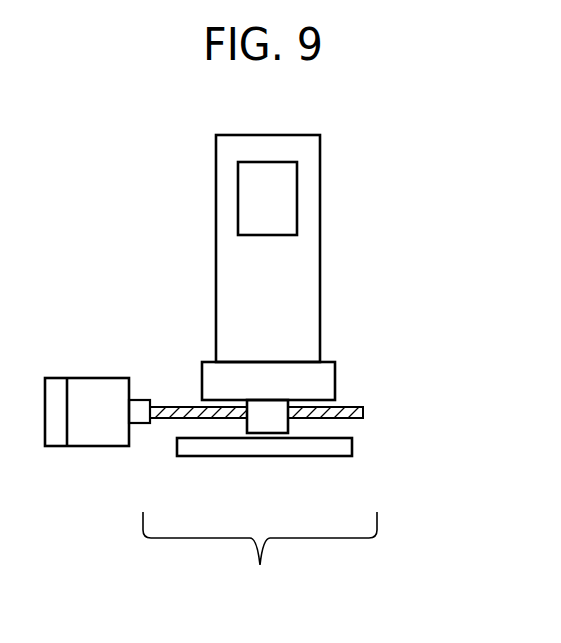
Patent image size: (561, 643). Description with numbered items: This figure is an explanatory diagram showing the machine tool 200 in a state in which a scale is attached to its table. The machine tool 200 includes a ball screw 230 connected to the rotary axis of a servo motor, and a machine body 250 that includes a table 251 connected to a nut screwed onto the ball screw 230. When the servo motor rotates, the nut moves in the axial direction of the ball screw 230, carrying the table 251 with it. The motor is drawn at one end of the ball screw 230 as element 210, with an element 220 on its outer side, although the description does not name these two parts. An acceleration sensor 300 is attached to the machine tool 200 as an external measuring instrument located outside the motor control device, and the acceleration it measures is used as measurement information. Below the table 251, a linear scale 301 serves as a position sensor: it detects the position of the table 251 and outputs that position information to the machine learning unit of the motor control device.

The machine tool 200 is at (260, 557).
The motor 210 is at (98, 382).
The encoder 220 is at (53, 446).
The ball screw 230 is at (363, 407).
The machine body 250 is at (320, 287).
The table 251 is at (337, 362).
The acceleration sensor 300 is at (297, 208).
The scale 301 is at (268, 456).